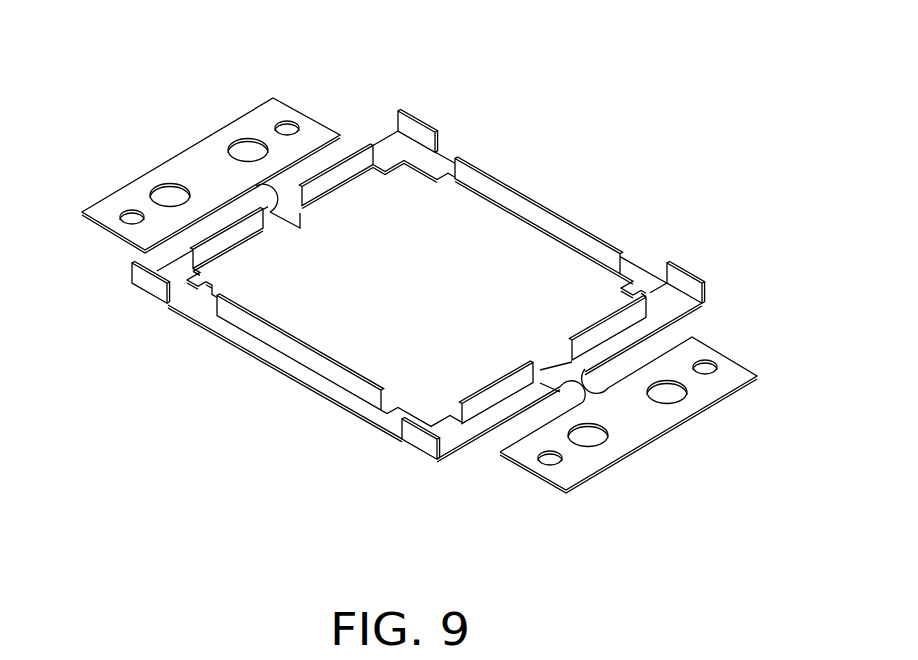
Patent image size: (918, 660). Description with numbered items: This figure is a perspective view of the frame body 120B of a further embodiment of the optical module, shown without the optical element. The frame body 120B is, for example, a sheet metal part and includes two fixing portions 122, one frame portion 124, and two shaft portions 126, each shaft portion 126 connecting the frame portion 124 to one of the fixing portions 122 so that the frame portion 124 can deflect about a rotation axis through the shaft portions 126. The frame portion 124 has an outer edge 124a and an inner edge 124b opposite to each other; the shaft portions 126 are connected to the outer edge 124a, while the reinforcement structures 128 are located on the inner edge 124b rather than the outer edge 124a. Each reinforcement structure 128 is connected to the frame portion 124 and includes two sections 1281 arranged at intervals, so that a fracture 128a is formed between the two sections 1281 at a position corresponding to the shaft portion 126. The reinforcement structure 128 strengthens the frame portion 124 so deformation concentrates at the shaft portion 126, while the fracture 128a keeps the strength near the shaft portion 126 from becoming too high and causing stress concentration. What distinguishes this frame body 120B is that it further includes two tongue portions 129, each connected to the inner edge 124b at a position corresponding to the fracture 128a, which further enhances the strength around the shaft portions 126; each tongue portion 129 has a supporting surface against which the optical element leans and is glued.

The frame body 120B is at (688, 464).
The fixing portion 122 is at (135, 195).
The frame portion 124 is at (322, 396).
The outer edge 124a is at (628, 348).
The inner edge 124b is at (598, 262).
The shaft portion 126 is at (280, 212).
The reinforcement structure 128 is at (186, 392).
The section 1281 is at (147, 299).
The fracture 128a is at (300, 210).
The tongue portion 129 is at (227, 198).